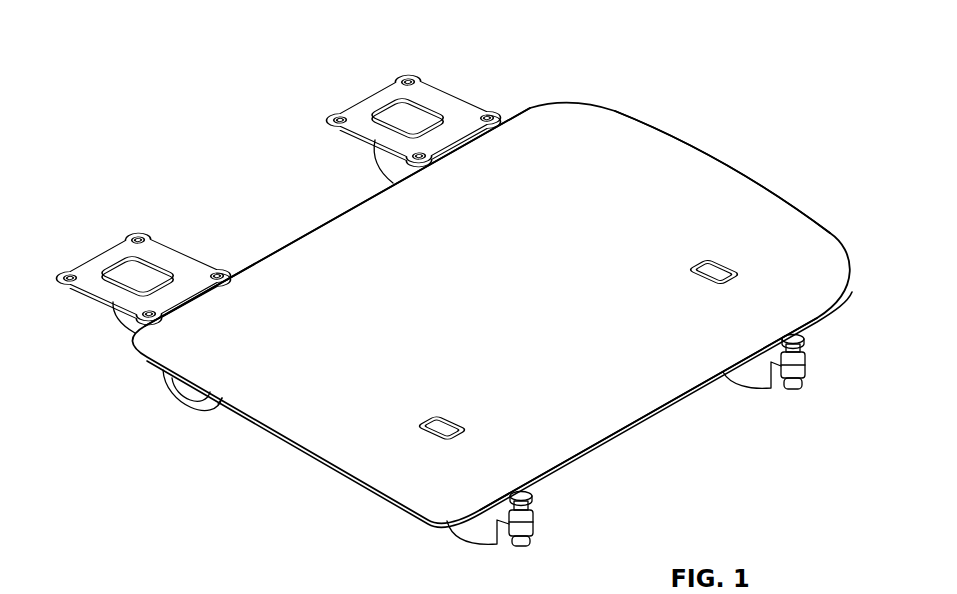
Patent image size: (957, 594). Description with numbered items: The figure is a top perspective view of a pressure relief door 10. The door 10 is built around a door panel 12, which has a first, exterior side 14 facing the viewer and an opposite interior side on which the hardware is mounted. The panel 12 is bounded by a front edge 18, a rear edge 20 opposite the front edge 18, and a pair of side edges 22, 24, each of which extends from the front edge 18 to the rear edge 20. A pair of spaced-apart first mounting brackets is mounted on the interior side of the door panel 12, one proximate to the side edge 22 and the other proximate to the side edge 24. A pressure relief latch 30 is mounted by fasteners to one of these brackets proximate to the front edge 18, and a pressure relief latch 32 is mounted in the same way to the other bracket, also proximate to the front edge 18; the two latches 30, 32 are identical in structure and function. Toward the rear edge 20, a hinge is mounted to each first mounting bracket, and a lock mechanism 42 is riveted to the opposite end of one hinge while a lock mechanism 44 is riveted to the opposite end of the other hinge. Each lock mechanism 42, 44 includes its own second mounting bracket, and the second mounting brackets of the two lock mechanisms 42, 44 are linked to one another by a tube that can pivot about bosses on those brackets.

The pressure relief door 10 is at (122, 52).
The door panel 12 is at (550, 203).
The first, exterior side 14 is at (718, 230).
The front edge 18 is at (627, 428).
The rear edge 20 is at (310, 228).
The side edge 22 is at (725, 163).
The side edge 24 is at (253, 420).
The pressure relief latch 30 is at (750, 372).
The pressure relief latch 32 is at (480, 533).
The lock mechanism 42 is at (438, 100).
The lock mechanism 44 is at (68, 264).